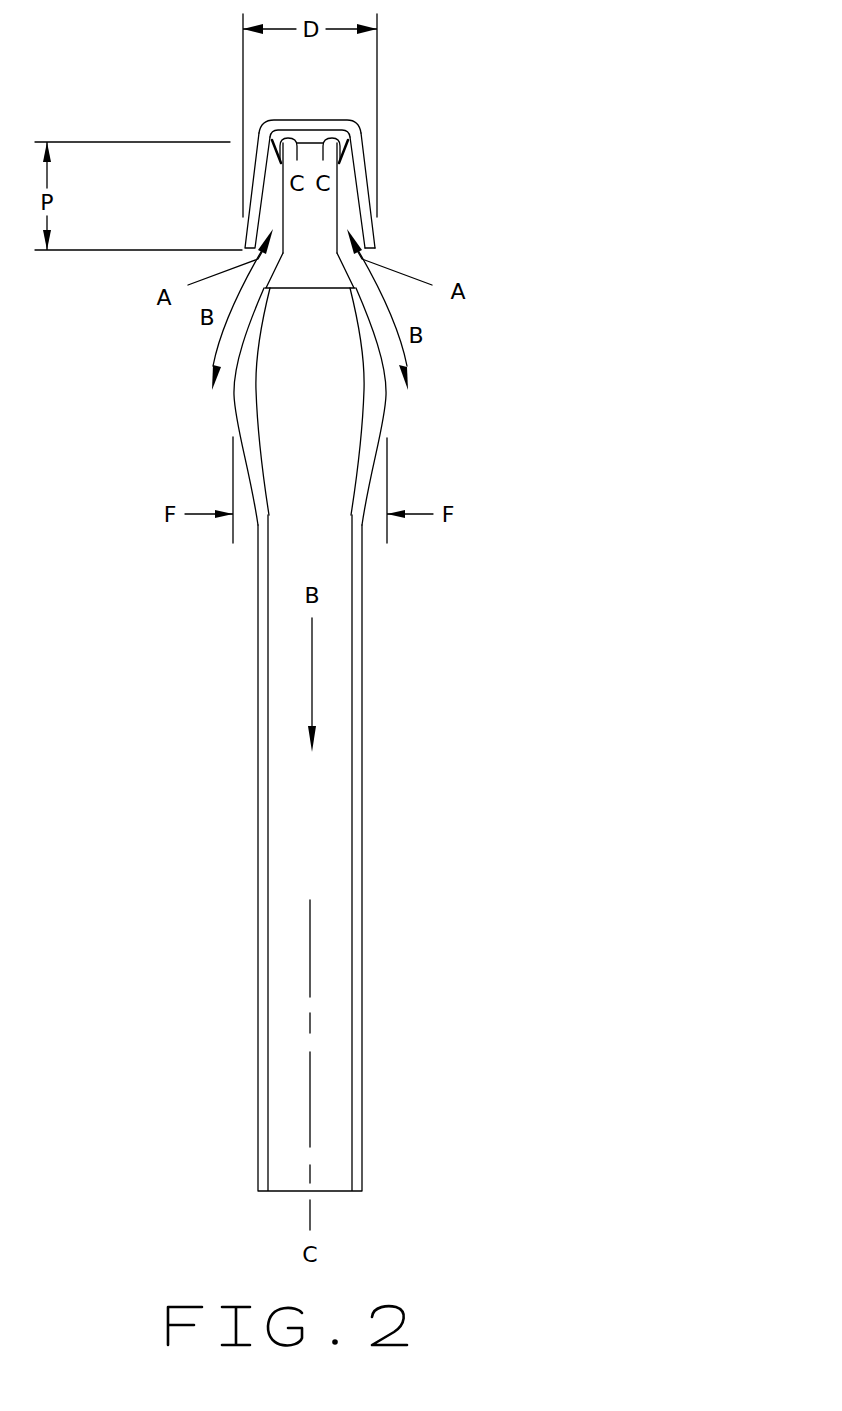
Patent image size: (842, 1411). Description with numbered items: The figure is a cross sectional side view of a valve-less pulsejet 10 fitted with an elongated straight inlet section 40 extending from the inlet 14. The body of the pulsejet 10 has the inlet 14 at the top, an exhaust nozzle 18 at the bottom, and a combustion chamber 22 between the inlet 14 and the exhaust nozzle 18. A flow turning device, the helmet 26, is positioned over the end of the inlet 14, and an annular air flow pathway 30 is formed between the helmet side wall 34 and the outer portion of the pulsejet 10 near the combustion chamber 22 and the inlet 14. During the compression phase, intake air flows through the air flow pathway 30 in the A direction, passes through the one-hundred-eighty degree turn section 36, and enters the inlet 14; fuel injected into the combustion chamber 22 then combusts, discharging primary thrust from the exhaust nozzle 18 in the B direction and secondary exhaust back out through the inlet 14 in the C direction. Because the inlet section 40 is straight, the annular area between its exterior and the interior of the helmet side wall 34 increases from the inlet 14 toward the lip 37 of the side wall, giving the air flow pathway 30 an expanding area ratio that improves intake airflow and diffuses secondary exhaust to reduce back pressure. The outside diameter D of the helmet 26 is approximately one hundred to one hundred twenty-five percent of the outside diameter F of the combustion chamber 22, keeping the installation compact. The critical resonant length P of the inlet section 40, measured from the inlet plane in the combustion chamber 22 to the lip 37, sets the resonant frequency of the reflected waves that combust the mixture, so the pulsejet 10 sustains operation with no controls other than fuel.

The pulsejet 10 is at (145, 82).
The inlet 14 is at (305, 302).
The exhaust nozzle 18 is at (320, 800).
The combustion chamber 22 is at (318, 393).
The helmet 26 is at (348, 119).
The air flow pathway 30 is at (272, 208).
The helmet side wall 34 is at (370, 228).
The 180° turn section 36 is at (283, 134).
The lip 37 is at (372, 255).
The elongated straight inlet section 40 is at (282, 180).